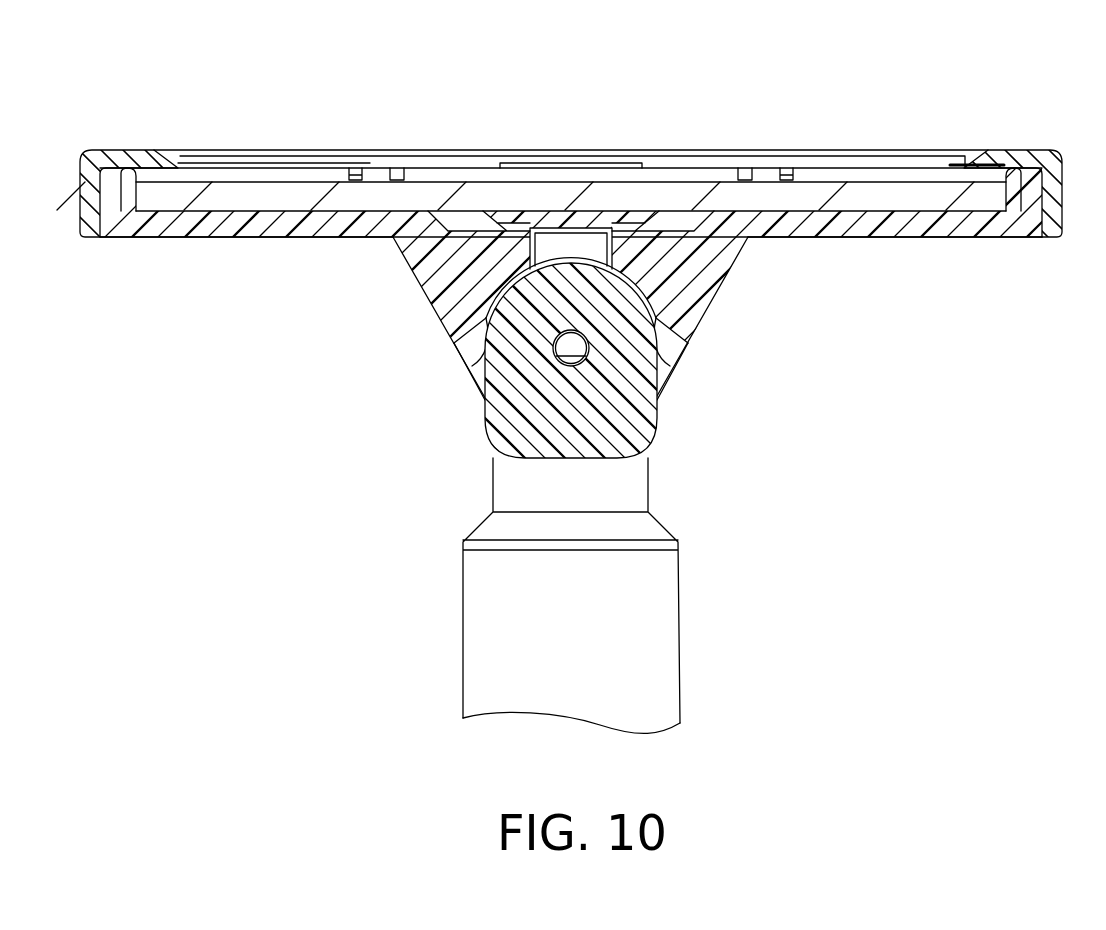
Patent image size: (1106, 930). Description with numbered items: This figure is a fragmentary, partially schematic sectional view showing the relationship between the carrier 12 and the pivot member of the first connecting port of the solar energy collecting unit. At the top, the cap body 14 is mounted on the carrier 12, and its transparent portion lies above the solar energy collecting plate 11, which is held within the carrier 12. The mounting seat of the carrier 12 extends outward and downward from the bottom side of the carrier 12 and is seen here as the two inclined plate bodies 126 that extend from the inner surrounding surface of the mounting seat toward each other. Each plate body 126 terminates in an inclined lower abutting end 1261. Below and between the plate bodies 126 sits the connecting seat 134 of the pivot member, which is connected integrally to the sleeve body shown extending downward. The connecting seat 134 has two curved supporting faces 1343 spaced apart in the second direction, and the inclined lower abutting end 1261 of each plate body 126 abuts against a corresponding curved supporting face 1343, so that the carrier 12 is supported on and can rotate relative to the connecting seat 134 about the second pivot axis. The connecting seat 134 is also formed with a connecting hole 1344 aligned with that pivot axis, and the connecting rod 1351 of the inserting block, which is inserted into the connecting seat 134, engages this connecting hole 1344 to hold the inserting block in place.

The solar energy collecting plate 11 is at (886, 193).
The carrier 12 is at (986, 237).
The cap body 14 is at (1023, 148).
The plate body 126 is at (425, 268).
The inclined lower abutting end 1261 is at (467, 363).
The connecting seat 134 is at (655, 412).
The curved supporting face 1343 is at (585, 262).
The connecting hole 1344 is at (563, 360).
The connecting rod 1351 is at (588, 350).